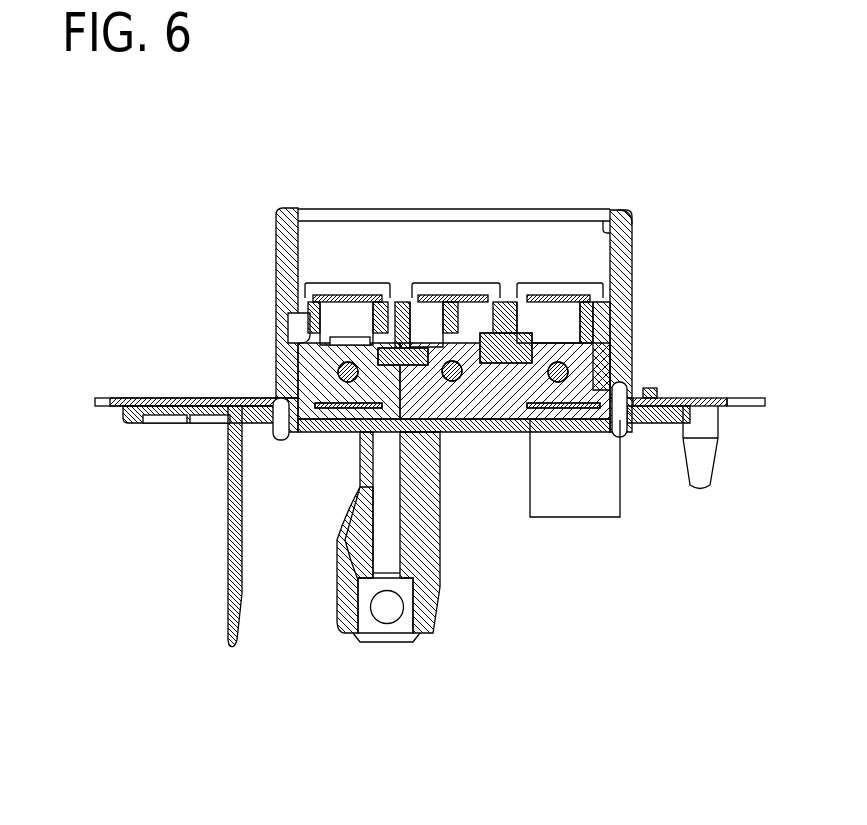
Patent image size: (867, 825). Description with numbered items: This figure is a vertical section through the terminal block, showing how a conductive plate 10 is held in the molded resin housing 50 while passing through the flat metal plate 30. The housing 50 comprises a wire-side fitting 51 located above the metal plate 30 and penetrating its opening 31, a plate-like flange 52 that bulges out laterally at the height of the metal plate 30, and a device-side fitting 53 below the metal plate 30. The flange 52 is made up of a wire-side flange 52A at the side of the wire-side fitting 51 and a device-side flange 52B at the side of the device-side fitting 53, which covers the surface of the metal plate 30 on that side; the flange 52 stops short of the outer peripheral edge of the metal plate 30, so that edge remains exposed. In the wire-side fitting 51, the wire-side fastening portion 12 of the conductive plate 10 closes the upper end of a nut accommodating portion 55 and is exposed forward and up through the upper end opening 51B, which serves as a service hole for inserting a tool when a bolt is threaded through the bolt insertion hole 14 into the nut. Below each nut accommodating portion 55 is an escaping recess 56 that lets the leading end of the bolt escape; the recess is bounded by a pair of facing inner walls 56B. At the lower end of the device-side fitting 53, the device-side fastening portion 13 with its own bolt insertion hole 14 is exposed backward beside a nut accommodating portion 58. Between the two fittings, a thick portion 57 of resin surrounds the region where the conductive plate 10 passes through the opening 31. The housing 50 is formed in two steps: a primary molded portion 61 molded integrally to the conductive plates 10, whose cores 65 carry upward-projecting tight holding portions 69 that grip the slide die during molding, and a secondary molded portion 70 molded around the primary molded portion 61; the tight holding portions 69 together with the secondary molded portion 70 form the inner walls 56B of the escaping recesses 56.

The conductive plate 10 is at (359, 433).
The wire-side fastening portion 12 is at (548, 303).
The device-side fastening portion 13 is at (402, 633).
The bolt insertion hole 14 is at (388, 613).
The metal plate 30 is at (128, 395).
The opening 31 is at (622, 440).
The housing 50 is at (430, 270).
The wire-side fitting 51 is at (623, 247).
The upper end opening 51B is at (614, 231).
The flange 52 is at (437, 428).
The wire-side flange 52A is at (648, 388).
The device-side flange 52B is at (158, 420).
The device-side fitting 53 is at (450, 537).
The nut accommodating portion 55 is at (510, 305).
The escaping recess 56 is at (318, 335).
The inner wall 56B is at (338, 318).
The thick portion 57 is at (298, 375).
The nut accommodating portion 58 is at (425, 615).
The primary molded portion 61 is at (606, 357).
The core 65 is at (484, 429).
The tight holding portion 69 is at (432, 345).
The secondary molded portion 70 is at (625, 281).